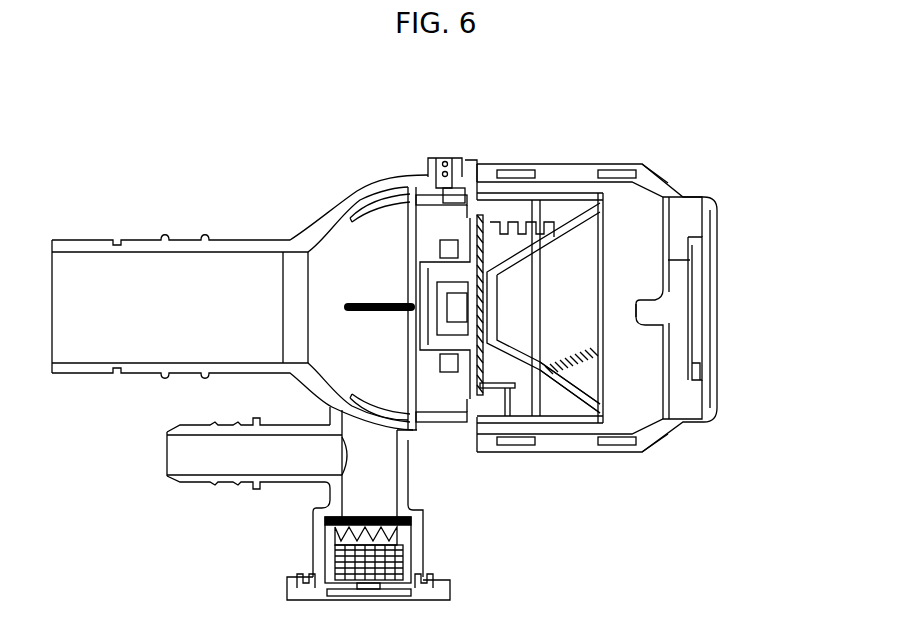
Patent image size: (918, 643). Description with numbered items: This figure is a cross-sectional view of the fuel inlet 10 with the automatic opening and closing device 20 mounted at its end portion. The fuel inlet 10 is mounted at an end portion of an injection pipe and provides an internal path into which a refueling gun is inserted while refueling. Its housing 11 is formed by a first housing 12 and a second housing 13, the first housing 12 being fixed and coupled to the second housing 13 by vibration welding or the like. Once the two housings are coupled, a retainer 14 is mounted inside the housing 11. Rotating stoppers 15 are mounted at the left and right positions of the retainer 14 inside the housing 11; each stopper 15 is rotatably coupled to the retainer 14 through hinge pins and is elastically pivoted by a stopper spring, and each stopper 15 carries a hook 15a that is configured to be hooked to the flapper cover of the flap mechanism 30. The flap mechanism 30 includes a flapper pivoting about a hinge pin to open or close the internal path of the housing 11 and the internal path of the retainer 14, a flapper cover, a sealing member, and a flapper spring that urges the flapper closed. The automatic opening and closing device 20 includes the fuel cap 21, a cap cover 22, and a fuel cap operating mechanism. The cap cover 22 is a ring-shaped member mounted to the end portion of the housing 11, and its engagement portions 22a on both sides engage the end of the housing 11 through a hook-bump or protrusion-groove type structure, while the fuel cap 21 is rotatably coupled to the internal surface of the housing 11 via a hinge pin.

The fuel inlet 10 is at (283, 211).
The housing 11 is at (440, 99).
The first housing 12 is at (370, 162).
The second housing 13 is at (477, 162).
The retainer 14 is at (578, 372).
The stopper 15 is at (517, 372).
The hook 15a is at (475, 447).
The automatic opening and closing device 20 is at (718, 213).
The fuel cap 21 is at (700, 327).
The cap cover 22 is at (718, 425).
The engagement portion 22a is at (652, 316).
The flap mechanism 30 is at (404, 367).